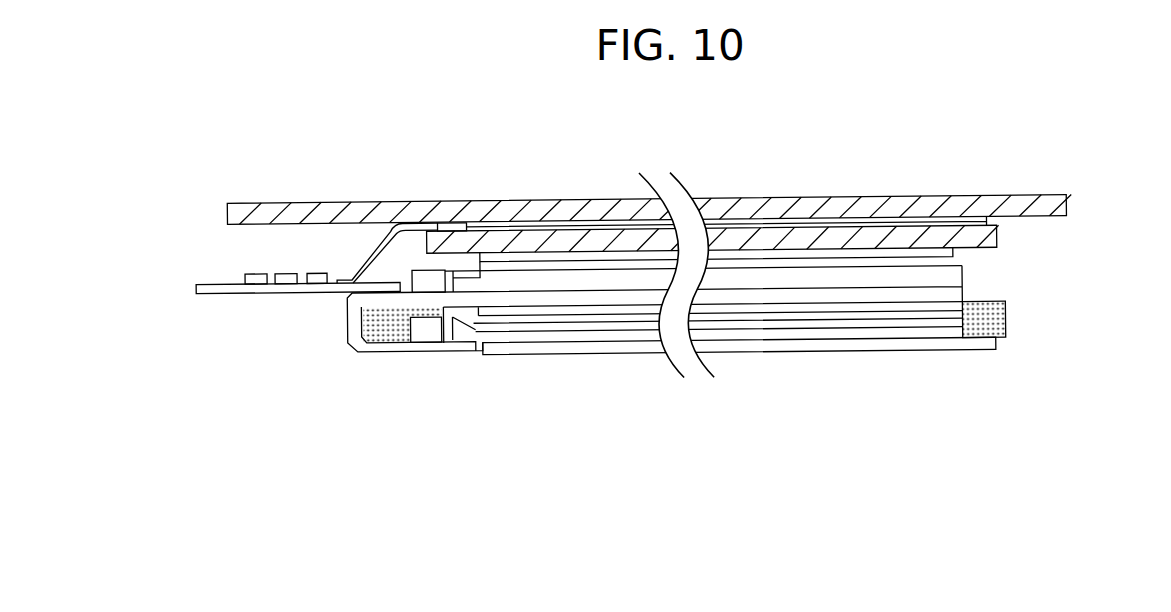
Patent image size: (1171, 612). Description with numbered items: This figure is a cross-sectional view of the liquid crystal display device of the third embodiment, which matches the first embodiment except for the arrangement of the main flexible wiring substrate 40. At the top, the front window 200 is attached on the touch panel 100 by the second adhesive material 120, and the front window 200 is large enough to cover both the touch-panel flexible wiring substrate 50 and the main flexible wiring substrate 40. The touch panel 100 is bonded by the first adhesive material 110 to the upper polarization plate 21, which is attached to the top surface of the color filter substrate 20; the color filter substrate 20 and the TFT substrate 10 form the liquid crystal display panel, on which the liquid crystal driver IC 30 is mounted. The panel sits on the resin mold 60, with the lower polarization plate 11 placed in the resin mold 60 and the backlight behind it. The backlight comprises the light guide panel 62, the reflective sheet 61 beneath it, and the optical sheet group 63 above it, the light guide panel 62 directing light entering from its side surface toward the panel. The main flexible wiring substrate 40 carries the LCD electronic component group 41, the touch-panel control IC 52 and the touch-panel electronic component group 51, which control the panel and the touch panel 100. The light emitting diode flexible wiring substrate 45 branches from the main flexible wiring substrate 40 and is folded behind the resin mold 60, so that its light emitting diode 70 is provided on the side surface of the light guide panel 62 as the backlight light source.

The front window 200 is at (1025, 196).
The second adhesive material 120 is at (978, 221).
The touch panel 100 is at (983, 239).
The first adhesive material 110 is at (955, 258).
The lower polarization plate 11 is at (950, 277).
The TFT substrate 10 is at (952, 294).
The color filter substrate 20 is at (962, 302).
The upper polarization plate 21 is at (782, 308).
The optical sheet group 63 is at (623, 327).
The light guide panel 62 is at (542, 337).
The reflective sheet 61 is at (983, 343).
The resin mold 60 is at (1000, 327).
The light emitting diode 70 is at (428, 332).
The light emitting diode flexible wiring substrate 45 is at (343, 336).
The main flexible wiring substrate 40 is at (238, 296).
The LCD electronic component group 41 is at (258, 270).
The touch-panel control IC 52 is at (290, 270).
The touch-panel electronic component group 51 is at (318, 270).
The touch-panel flexible wiring substrate 50 is at (384, 246).
The liquid crystal driver IC 30 is at (425, 282).